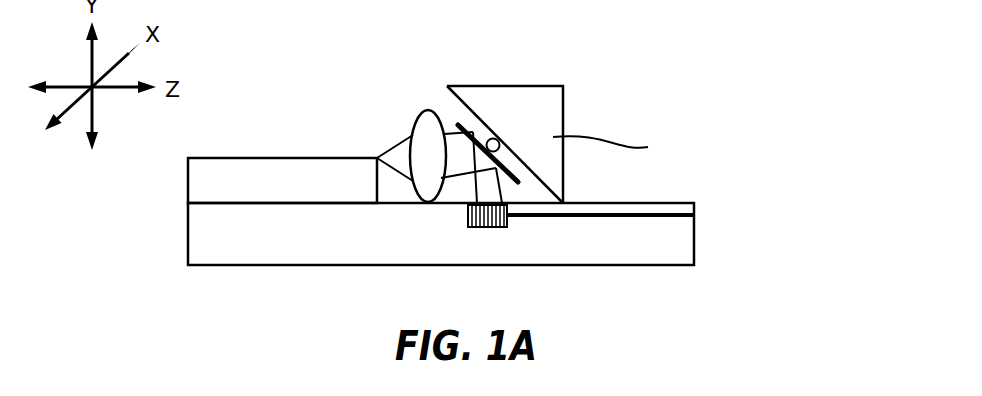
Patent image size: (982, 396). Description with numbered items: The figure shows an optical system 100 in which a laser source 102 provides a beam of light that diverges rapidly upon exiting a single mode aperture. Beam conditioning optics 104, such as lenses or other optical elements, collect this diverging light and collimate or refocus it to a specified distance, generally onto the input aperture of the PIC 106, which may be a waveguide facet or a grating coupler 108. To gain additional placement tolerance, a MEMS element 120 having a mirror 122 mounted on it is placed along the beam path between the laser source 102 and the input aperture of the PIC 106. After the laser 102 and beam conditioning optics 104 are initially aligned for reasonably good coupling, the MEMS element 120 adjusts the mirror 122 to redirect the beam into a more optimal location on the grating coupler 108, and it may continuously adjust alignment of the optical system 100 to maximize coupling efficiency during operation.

The optical system 100 is at (716, 25).
The laser source 102 is at (188, 180).
The beam conditioning optics 104 is at (418, 115).
The PIC 106 is at (235, 265).
The grating coupler 108 is at (468, 217).
The MEMS element 120 is at (565, 107).
The mirror 122 is at (465, 127).